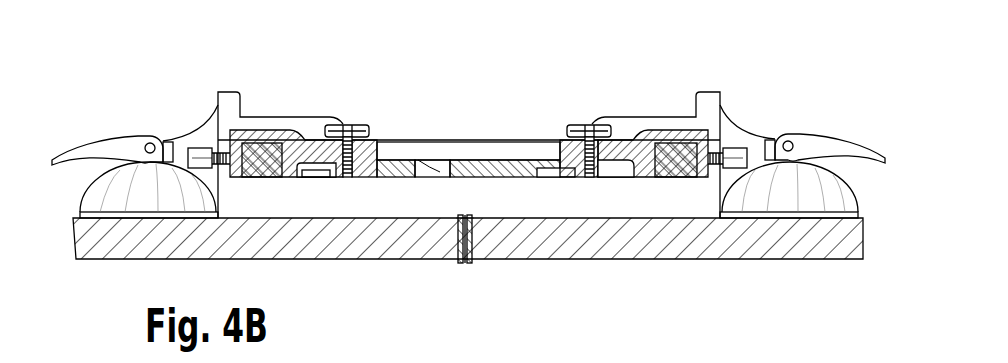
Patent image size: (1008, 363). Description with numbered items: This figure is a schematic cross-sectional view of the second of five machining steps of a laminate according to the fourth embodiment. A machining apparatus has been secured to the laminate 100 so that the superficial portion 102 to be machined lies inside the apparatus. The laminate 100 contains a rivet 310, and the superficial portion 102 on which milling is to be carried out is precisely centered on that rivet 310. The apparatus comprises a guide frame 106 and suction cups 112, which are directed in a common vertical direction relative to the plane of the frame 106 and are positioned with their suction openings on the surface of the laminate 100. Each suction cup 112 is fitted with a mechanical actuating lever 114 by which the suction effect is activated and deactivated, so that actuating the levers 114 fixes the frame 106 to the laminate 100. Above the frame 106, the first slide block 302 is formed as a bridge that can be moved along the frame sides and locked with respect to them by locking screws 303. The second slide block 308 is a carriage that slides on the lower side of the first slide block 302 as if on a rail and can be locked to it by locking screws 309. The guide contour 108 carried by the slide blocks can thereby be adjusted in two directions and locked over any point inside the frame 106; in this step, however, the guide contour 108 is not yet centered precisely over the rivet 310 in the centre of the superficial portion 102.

The laminate 100 is at (660, 240).
The superficial portion 102 is at (485, 265).
The guide frame 106 is at (270, 150).
The guide contour 108 is at (433, 158).
The suction cup 112 is at (172, 188).
The mechanical actuating lever 114 is at (120, 140).
The first slide block 302 is at (641, 140).
The locking screw 303 is at (202, 160).
The second slide block 308 is at (500, 142).
The locking screw 309 is at (350, 125).
The rivet 310 is at (478, 240).